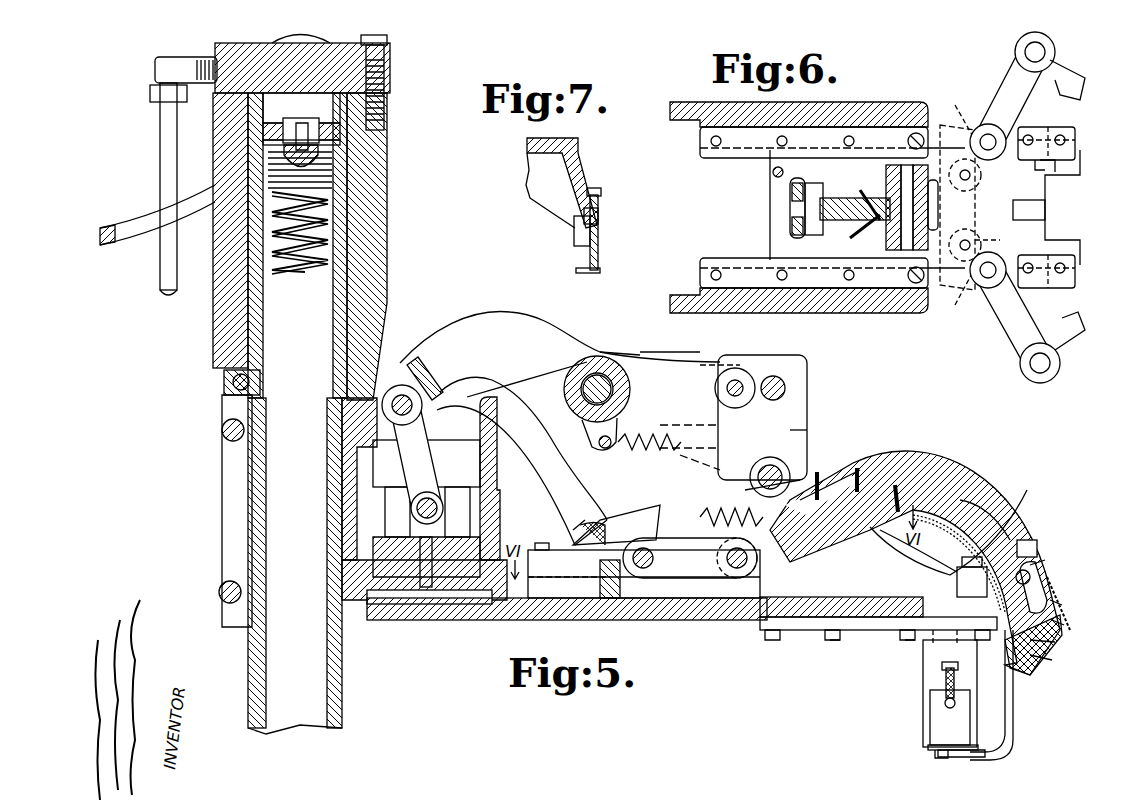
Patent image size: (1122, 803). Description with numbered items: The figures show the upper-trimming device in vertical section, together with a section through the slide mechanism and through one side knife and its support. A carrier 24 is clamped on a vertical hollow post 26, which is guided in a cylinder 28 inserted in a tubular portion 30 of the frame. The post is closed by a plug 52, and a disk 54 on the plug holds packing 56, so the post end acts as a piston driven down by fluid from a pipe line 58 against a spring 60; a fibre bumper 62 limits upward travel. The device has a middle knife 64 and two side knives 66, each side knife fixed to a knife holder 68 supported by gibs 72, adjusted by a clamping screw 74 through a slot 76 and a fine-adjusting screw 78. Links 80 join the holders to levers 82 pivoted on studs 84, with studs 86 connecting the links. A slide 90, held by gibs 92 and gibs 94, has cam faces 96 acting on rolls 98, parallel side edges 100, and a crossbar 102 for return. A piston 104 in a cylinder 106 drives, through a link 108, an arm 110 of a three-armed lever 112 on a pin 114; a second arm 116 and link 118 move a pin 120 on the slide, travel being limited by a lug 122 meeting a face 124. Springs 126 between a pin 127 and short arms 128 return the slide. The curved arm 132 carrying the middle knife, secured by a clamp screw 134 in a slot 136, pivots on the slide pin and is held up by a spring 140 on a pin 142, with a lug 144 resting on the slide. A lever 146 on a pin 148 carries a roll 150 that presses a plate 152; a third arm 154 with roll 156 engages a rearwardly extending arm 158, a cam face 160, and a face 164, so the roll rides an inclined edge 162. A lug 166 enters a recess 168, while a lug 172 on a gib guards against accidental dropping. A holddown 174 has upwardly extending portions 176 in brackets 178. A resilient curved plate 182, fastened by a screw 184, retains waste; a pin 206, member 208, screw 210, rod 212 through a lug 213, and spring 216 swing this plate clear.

In FIG. 5, the carrier 24 is at (680, 622).
In FIG. 6, the carrier 24 is at (900, 305).
In FIG. 5, the vertical hollow post 26 is at (342, 672).
In FIG. 5, the cylinder 28 is at (345, 222).
In FIG. 5, the tubular portion of the frame 30 is at (376, 203).
In FIG. 5, the plug 52 is at (340, 170).
In FIG. 5, the disk 54 is at (315, 110).
In FIG. 5, the packing 56 is at (340, 133).
In FIG. 5, the pipe line 58 is at (160, 148).
In FIG. 5, the spring 60 is at (300, 275).
In FIG. 5, the fibre bumper 62 is at (224, 382).
In FIG. 5, the middle knife 64 is at (1040, 675).
In FIG. 5, the side knives 66 is at (928, 748).
In FIG. 7, the side knives 66 is at (600, 270).
In FIG. 5, the knife holder 68 is at (923, 665).
In FIG. 7, the knife holder 68 is at (578, 160).
In FIG. 5, the gibs 72 is at (855, 640).
In FIG. 5, the clamping screw 74 is at (945, 705).
In FIG. 7, the clamping screw 74 is at (574, 232).
In FIG. 7, the slot 76 is at (584, 214).
In FIG. 5, the screw 78 is at (946, 685).
In FIG. 7, the screw 78 is at (598, 195).
In FIG. 6, the links 80 is at (1070, 62).
In FIG. 6, the levers 82 is at (1012, 70).
In FIG. 6, the studs 84 is at (975, 200).
In FIG. 5, the studs 86 is at (923, 650).
In FIG. 5, the slide 90 is at (600, 580).
In FIG. 6, the slide 90 is at (1080, 225).
In FIG. 5, the gibs 92 is at (558, 550).
In FIG. 6, the gibs 92 is at (740, 145).
In FIG. 6, the gibs 94 is at (1075, 130).
In FIG. 6, the cam faces 96 is at (1000, 130).
In FIG. 6, the rolls 98 is at (960, 204).
In FIG. 6, the parallel side edges 100 is at (1063, 207).
In FIG. 6, the crossbar 102 is at (998, 231).
In FIG. 5, the piston 104 is at (525, 522).
In FIG. 5, the cylinder 106 is at (497, 500).
In FIG. 5, the link 108 is at (418, 422).
In FIG. 5, the arm 110 is at (465, 325).
In FIG. 5, the three-armed lever 112 is at (575, 330).
In FIG. 5, the pin 114 is at (612, 386).
In FIG. 5, the second arm 116 is at (583, 460).
In FIG. 6, the second arm 116 is at (790, 222).
In FIG. 5, the link 118 is at (655, 580).
In FIG. 6, the link 118 is at (850, 220).
In FIG. 5, the pin 120 is at (740, 580).
In FIG. 6, the pin 120 is at (900, 245).
In FIG. 5, the lug 122 is at (592, 525).
In FIG. 5, the face 124 is at (570, 525).
In FIG. 5, the springs 126 is at (660, 432).
In FIG. 5, the pin 127 is at (800, 430).
In FIG. 5, the short arms 128 is at (592, 430).
In FIG. 5, the curved arm 132 is at (928, 468).
In FIG. 6, the curved arm 132 is at (885, 190).
In FIG. 5, the clamp screw 134 is at (1050, 642).
In FIG. 5, the slot 136 is at (1050, 658).
In FIG. 5, the spring 140 is at (650, 520).
In FIG. 5, the pin 142 is at (569, 571).
In FIG. 5, the lug 144 is at (710, 502).
In FIG. 6, the lug 144 is at (850, 238).
In FIG. 5, the lever 146 is at (790, 395).
In FIG. 5, the pin 148 is at (785, 382).
In FIG. 5, the roll 150 is at (790, 470).
In FIG. 5, the plate 152 is at (840, 470).
In FIG. 5, the third arm 154 is at (672, 362).
In FIG. 5, the roll 156 is at (745, 375).
In FIG. 5, the rearwardly extending arm 158 is at (720, 365).
In FIG. 5, the cam face 160 is at (712, 425).
In FIG. 5, the inclined edge 162 is at (795, 480).
In FIG. 5, the face 164 is at (700, 459).
In FIG. 5, the lug 166 is at (957, 580).
In FIG. 6, the lug 166 is at (1045, 210).
In FIG. 5, the recess 168 is at (857, 468).
In FIG. 5, the lug 172 is at (950, 560).
In FIG. 6, the lug 172 is at (1055, 170).
In FIG. 5, the holddown 174 is at (985, 757).
In FIG. 5, the upwardly extending portions 176 is at (1013, 712).
In FIG. 5, the brackets 178 is at (948, 532).
In FIG. 5, the resilient curved plate 182 is at (1000, 495).
In FIG. 5, the screw 184 is at (897, 485).
In FIG. 5, the pin 206 is at (1030, 545).
In FIG. 5, the member 208 is at (1031, 575).
In FIG. 5, the screw 210 is at (1045, 560).
In FIG. 5, the rod 212 is at (1062, 625).
In FIG. 5, the lug 213 is at (1060, 605).
In FIG. 5, the spring 216 is at (1056, 590).